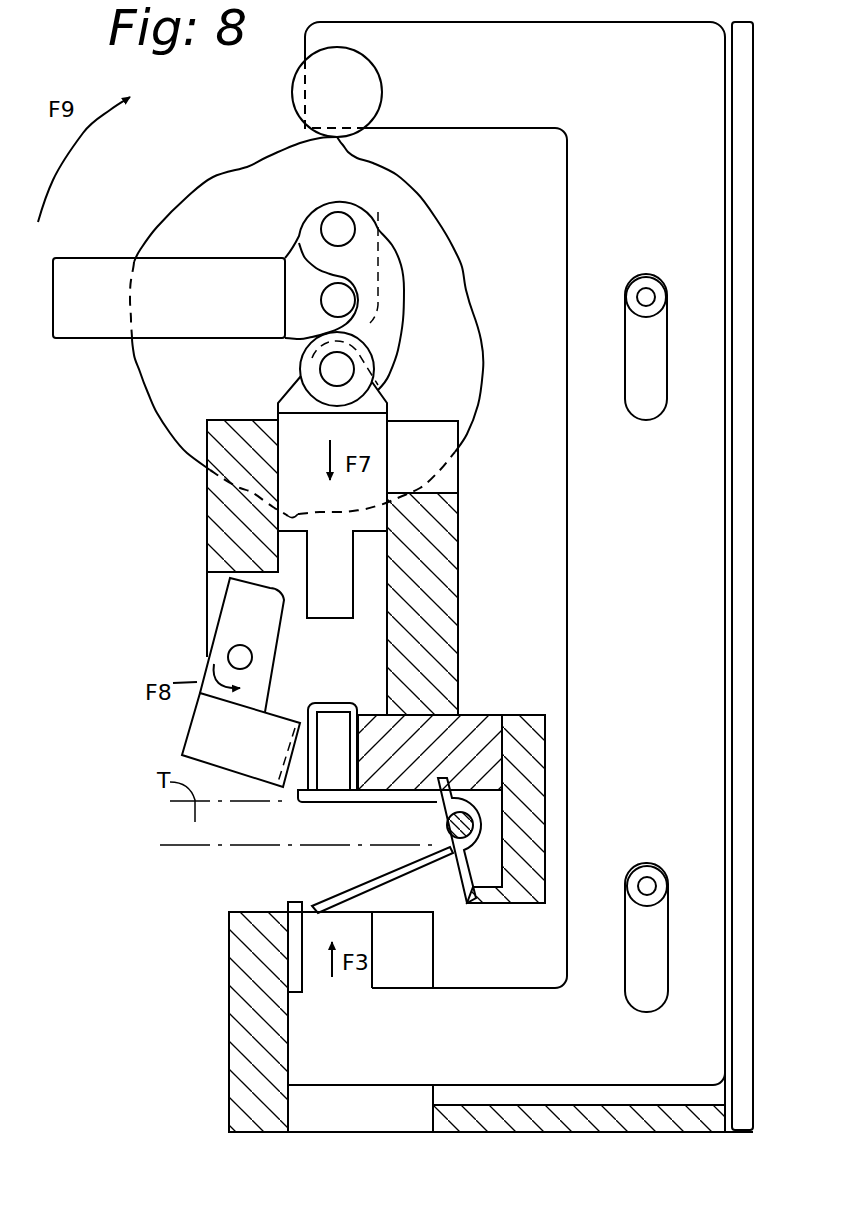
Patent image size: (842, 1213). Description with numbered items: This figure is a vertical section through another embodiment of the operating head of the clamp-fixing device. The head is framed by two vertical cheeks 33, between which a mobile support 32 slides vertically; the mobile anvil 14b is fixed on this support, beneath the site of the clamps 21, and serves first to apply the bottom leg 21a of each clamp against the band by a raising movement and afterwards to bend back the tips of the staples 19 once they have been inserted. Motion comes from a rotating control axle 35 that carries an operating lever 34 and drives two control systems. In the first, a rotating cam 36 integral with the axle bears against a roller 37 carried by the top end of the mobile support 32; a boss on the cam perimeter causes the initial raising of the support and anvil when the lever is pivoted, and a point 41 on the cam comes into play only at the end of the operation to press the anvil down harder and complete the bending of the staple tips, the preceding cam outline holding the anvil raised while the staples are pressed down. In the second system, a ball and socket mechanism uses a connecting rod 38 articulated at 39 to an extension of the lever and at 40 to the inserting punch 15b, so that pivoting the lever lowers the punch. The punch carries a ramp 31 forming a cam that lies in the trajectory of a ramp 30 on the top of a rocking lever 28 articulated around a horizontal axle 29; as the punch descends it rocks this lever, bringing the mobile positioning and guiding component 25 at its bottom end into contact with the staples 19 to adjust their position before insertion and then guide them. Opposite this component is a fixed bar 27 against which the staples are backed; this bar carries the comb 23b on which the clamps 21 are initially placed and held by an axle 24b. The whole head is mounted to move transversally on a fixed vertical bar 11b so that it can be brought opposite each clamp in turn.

The mobile support 32 is at (570, 1070).
The vertical cheeks 33 is at (653, 1097).
The mobile anvil 14b is at (347, 925).
The roller 37 is at (295, 82).
The rotating cam 36 is at (187, 205).
The operating lever 34 is at (65, 273).
The connecting rod 38 is at (380, 358).
The articulation point of the connecting rod and lever extension 39 is at (343, 227).
The rotating control axle 35 is at (327, 297).
The articulation point of the connecting rod and punch 40 is at (335, 367).
The ramp 30 is at (293, 600).
The inserting punch 15b is at (345, 611).
The ramp forming a cam 31 is at (283, 520).
The point on the cam 41 is at (289, 516).
The rocking lever 28 is at (268, 633).
The horizontal axle 29 is at (240, 645).
The mobile positioning and guiding component 25 is at (283, 730).
The staples 19 is at (352, 677).
The fixed bar 27 is at (424, 727).
The clamps 21 is at (380, 805).
The fixed vertical bar 11b is at (537, 847).
The comb 23b is at (437, 825).
The axle 24b is at (480, 827).
The bottom leg of the clamp 21a is at (337, 897).